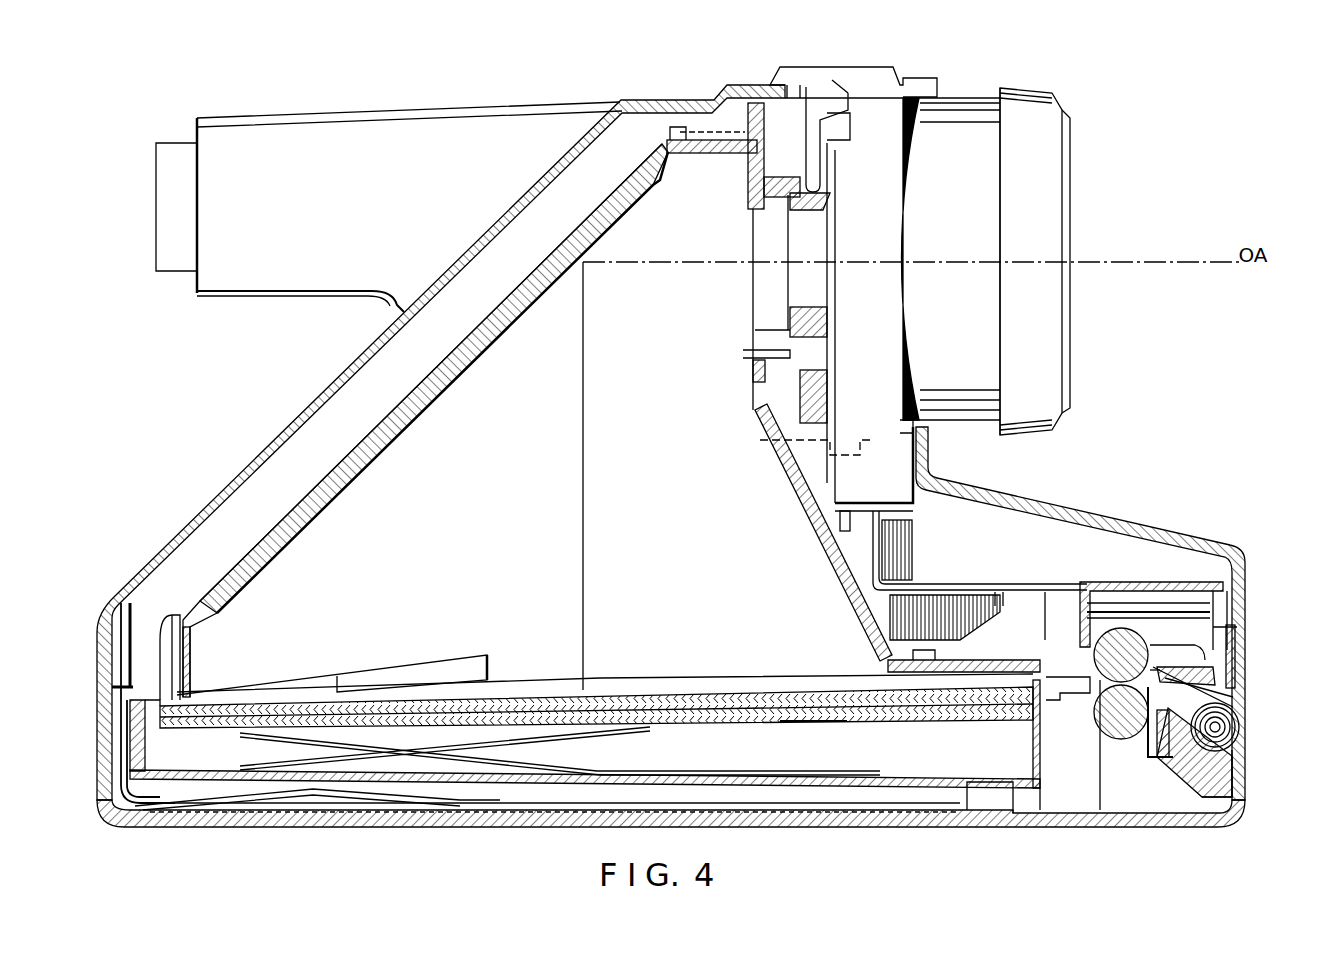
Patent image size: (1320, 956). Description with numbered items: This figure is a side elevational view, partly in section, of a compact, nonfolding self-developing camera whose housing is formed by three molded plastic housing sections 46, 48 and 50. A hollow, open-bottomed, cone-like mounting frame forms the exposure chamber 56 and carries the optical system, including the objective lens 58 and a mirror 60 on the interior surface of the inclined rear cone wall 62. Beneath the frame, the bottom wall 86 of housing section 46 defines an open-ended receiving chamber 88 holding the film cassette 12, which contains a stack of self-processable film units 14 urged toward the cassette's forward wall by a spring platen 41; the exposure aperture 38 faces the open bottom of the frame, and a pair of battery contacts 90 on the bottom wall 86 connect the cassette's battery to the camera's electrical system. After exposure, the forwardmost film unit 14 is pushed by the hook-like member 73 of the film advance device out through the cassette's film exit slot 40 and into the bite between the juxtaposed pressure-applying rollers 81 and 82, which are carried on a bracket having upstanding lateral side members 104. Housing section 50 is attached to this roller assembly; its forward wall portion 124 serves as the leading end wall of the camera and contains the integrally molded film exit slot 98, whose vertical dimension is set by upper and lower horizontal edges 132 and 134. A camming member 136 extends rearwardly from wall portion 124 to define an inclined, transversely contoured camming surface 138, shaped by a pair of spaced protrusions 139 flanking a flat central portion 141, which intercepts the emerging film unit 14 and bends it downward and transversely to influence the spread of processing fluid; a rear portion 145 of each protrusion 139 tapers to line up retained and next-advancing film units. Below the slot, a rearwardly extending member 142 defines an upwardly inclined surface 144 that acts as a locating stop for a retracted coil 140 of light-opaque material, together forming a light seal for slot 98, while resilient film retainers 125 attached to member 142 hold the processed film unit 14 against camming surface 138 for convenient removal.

The film cassette 12 is at (1042, 786).
The film unit 14 is at (852, 730).
The exposure aperture 38 is at (677, 696).
The film exit slot 40 is at (1036, 708).
The spring platen 41 is at (601, 734).
The housing section 46 is at (863, 829).
The housing section 48 is at (1126, 512).
The housing section 50 is at (1243, 829).
The exposure chamber 56 is at (465, 441).
The objective lens 58 is at (1071, 207).
The mirror 60 is at (538, 304).
The inclined rear cone wall 62 is at (526, 294).
The hook-like member 73 is at (412, 670).
The pressure-applying roller 81 is at (1128, 632).
The pressure-applying roller 82 is at (1101, 720).
The bottom wall 86 is at (549, 820).
The receiving chamber 88 is at (170, 782).
The battery contacts 90 is at (282, 794).
The film exit slot 98 is at (1232, 755).
The lateral side member 104 is at (1110, 752).
The forward wall portion 124 is at (1238, 598).
The resilient film retainer 125 is at (1178, 745).
The upper horizontal edge 132 is at (1236, 705).
The lower horizontal edge 134 is at (1246, 785).
The camming member 136 is at (1203, 667).
The camming surface 138 is at (1236, 664).
The protrusion 139 is at (1236, 687).
The coil 140 is at (1240, 726).
The flat central portion 141 is at (1232, 650).
The rearwardly extending member 142 is at (1205, 768).
The upwardly inclined surface 144 is at (1246, 758).
The rear portion 145 is at (1195, 680).